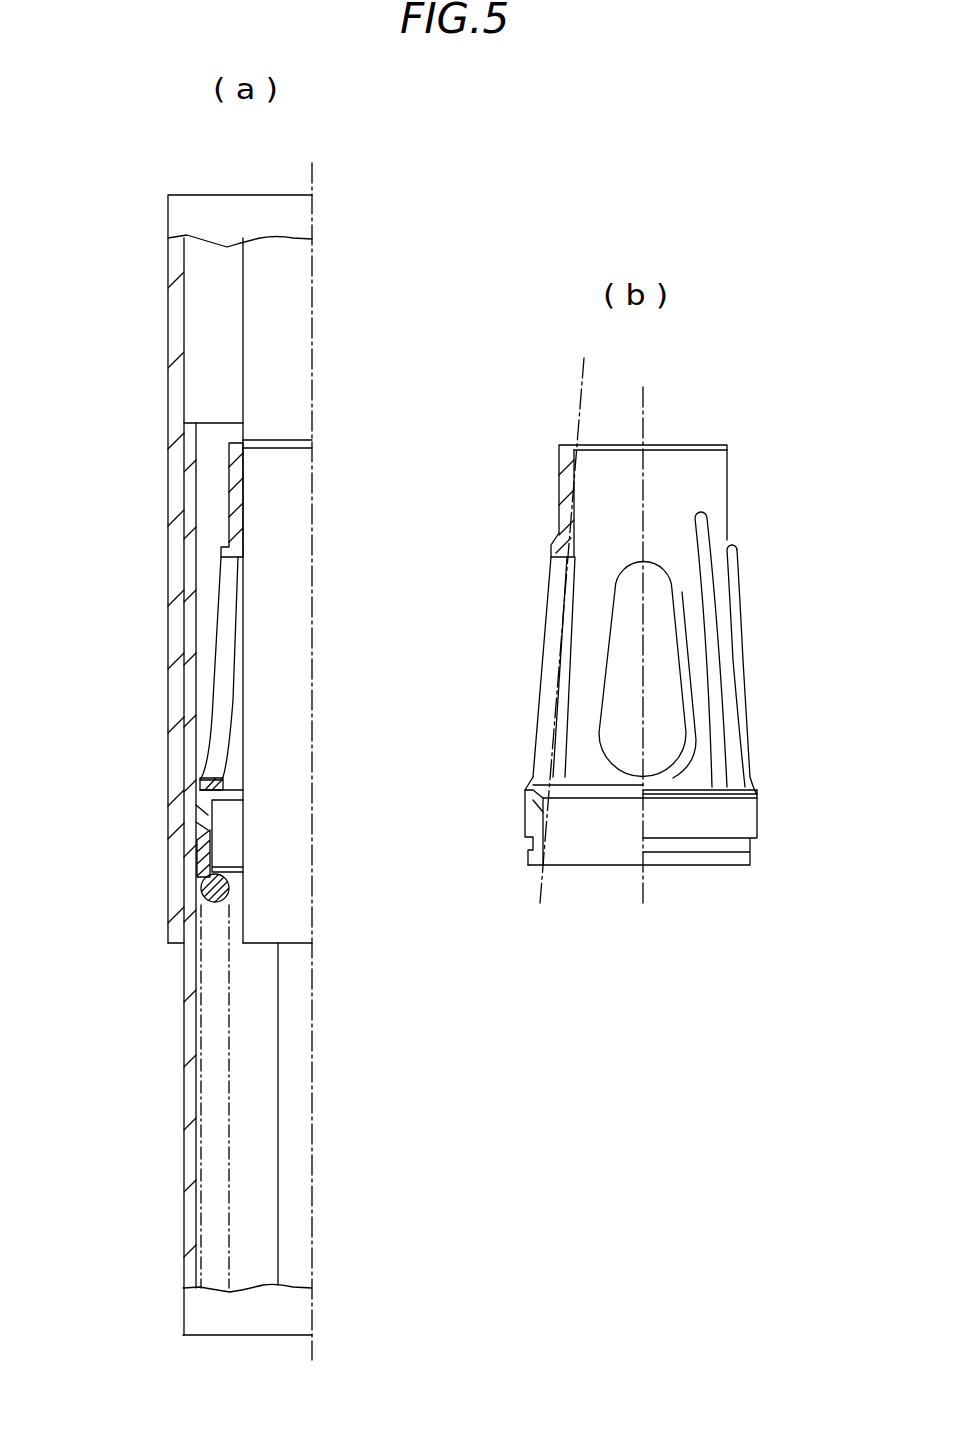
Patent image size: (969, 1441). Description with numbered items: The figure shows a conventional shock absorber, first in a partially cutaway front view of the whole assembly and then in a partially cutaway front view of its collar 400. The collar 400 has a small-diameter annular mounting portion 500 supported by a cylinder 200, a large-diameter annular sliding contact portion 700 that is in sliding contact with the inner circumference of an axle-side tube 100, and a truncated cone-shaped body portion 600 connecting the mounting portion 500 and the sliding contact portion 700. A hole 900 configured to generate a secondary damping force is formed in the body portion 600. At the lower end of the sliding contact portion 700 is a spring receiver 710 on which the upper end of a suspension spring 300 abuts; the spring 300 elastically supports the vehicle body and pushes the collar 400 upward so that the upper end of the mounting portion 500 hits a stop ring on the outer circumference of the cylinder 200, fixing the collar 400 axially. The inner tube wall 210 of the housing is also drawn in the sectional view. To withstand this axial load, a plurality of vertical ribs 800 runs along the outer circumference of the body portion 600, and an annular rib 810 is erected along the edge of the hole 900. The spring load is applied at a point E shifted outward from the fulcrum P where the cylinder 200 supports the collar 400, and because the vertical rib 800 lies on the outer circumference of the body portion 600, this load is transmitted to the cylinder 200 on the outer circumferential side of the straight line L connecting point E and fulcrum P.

The axle-side tube 100 is at (183, 1209).
The cylinder 200 is at (243, 333).
The inner tube portion of housing 210 is at (196, 434).
The suspension spring 300 is at (207, 903).
The collar 400 is at (190, 633).
The mounting portion 500 is at (230, 510).
The body portion 600 is at (575, 660).
The sliding contact portion 700 is at (210, 810).
The spring receiver 710 is at (203, 885).
The vertical rib 800 is at (713, 664).
The annular rib 810 is at (732, 541).
The hole 900 is at (228, 676).
The straight line L is at (591, 616).
The fulcrum P is at (574, 447).
The point E is at (540, 866).